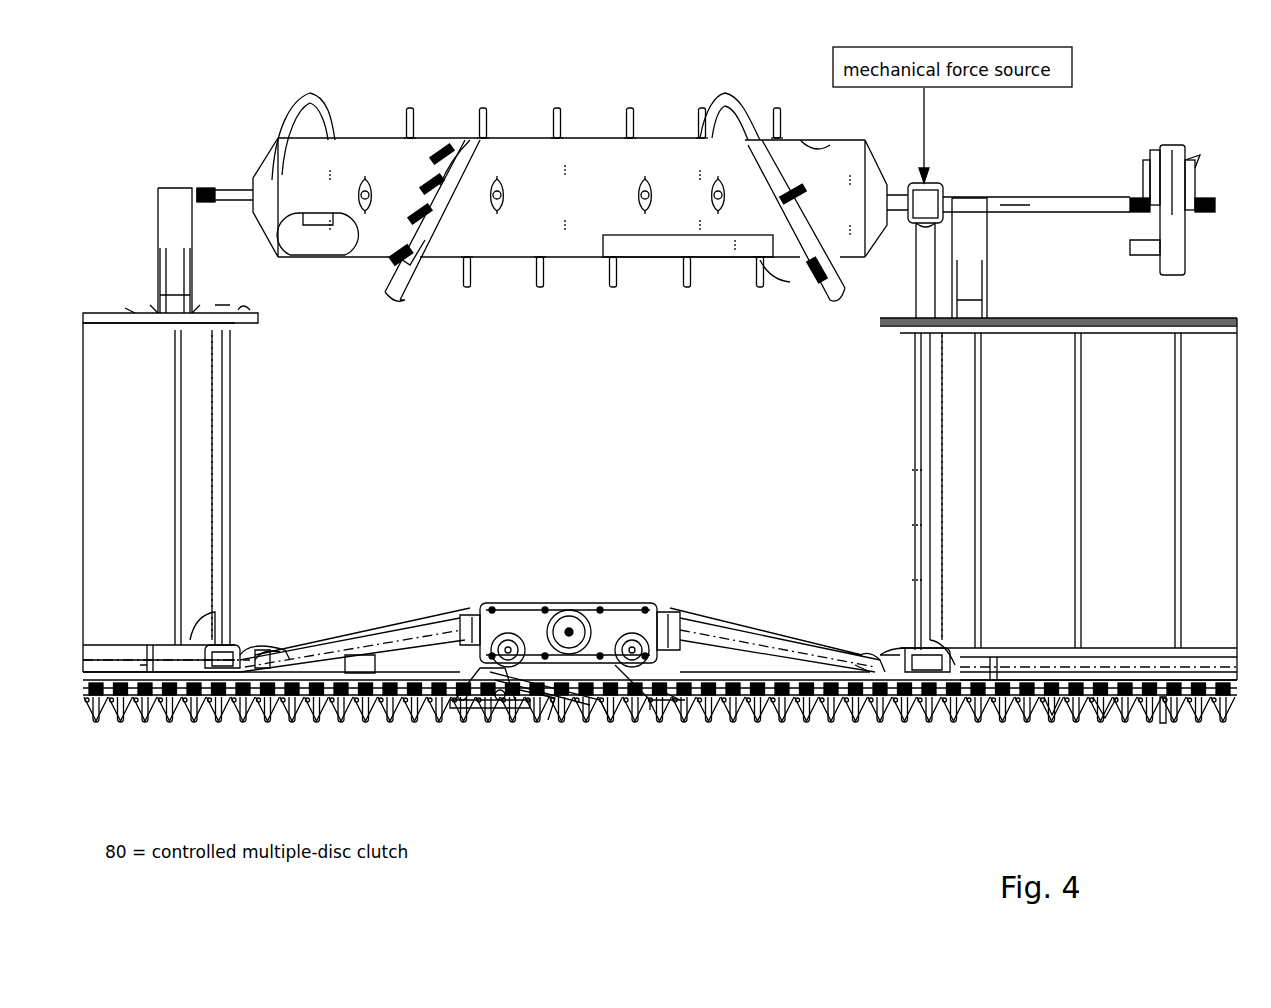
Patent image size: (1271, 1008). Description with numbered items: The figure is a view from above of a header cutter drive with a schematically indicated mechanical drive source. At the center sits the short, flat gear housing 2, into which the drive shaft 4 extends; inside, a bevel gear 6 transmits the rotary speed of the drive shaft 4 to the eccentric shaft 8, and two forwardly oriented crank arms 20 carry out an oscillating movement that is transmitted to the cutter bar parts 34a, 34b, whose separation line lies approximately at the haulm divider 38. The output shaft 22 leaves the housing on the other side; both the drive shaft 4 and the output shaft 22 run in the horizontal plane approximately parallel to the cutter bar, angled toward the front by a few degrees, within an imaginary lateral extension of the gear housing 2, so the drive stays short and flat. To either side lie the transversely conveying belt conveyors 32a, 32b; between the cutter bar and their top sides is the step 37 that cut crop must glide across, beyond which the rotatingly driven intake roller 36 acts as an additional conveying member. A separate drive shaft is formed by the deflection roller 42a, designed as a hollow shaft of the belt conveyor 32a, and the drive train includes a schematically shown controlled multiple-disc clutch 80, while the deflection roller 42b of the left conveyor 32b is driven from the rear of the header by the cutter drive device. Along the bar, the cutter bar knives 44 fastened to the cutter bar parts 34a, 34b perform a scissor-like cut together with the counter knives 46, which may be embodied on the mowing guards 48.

The gear housing 2 is at (614, 608).
The drive shaft 4 is at (872, 672).
The bevel gear 6 is at (230, 693).
The eccentric shaft 8 is at (568, 630).
The crank arms 20 is at (505, 668).
The output shaft 22 is at (390, 673).
The belt conveyor 32a is at (1068, 499).
The belt conveyor 32b is at (166, 497).
The cutter bar part 34a is at (765, 727).
The cutter bar part 34b is at (333, 697).
The intake roller 36 is at (553, 240).
The step 37 is at (367, 667).
The haulm divider 38 is at (548, 693).
The deflection roller 42a is at (928, 463).
The deflection roller 42b is at (215, 488).
The cutter bar knives 44 is at (1052, 708).
The counter knives 46 is at (1105, 712).
The mowing guards 48 is at (1163, 723).
The controlled multiple-disc clutch 80 is at (906, 554).